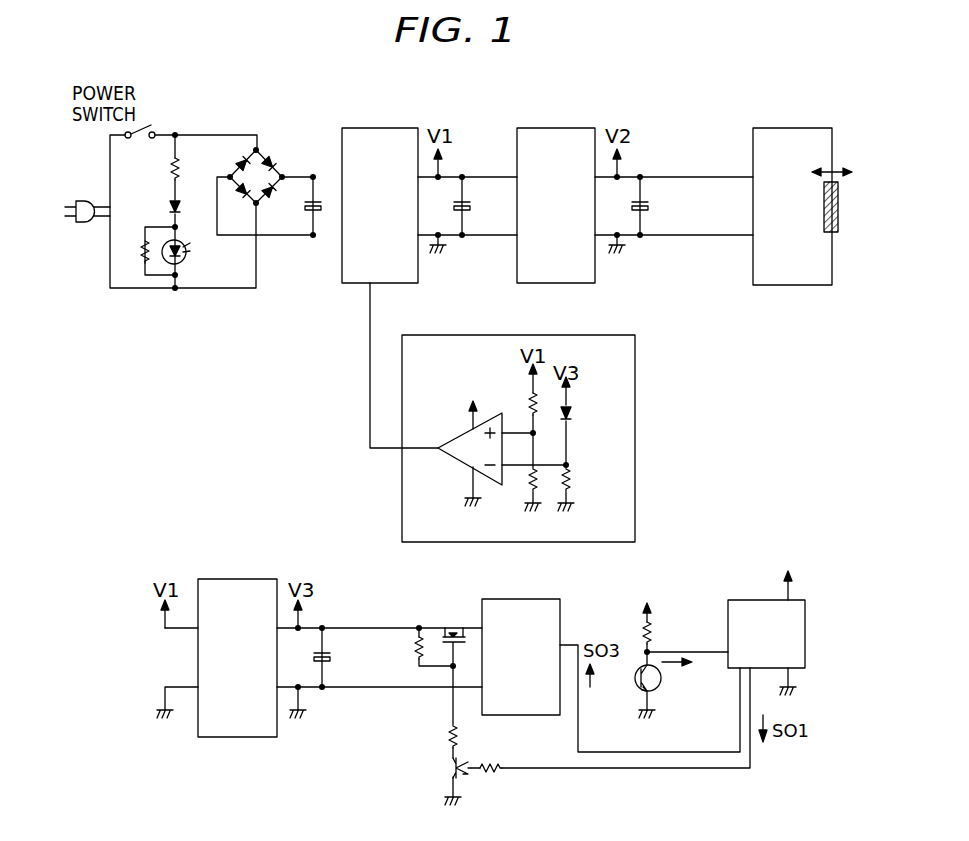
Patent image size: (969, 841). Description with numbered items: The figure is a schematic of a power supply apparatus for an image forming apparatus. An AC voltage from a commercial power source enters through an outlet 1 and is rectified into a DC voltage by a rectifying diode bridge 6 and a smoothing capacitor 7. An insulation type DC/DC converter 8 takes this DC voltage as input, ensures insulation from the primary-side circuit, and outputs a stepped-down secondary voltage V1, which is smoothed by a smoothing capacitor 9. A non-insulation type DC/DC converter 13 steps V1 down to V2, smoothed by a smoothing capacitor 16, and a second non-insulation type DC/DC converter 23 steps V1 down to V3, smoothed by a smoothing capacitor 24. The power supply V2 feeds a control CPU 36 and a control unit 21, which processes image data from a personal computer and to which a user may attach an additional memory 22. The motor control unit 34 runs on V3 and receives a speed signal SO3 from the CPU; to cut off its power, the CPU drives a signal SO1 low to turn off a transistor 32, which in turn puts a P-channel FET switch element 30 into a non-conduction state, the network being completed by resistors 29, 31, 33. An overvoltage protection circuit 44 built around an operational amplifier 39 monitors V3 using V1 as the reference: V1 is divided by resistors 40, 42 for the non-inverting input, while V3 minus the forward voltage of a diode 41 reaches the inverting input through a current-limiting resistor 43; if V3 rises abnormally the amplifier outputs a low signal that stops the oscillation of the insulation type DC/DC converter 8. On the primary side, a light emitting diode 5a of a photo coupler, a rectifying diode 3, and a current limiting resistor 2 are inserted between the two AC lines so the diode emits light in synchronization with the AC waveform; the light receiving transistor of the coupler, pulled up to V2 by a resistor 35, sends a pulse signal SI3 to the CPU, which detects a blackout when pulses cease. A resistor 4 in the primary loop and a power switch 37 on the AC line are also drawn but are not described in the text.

The outlet 1 is at (75, 201).
The current limiting resistor 2 is at (171, 171).
The rectifying diode 3 is at (171, 208).
The resistor 4 is at (140, 253).
The light emitting diode 5a is at (170, 263).
The rectifying diode bridge 6 is at (268, 164).
The smoothing capacitor 7 is at (307, 206).
The insulation type DC/DC converter 8 is at (398, 128).
The smoothing capacitor 9 is at (467, 202).
The non-insulation type DC/DC converter 13 is at (578, 128).
The smoothing capacitor 16 is at (655, 204).
The control unit 21 is at (806, 128).
The additional memory 22 is at (826, 232).
The non-insulation type DC/DC converter 23 is at (247, 579).
The smoothing capacitor 24 is at (331, 653).
The resistor 29 is at (416, 651).
The switch element 30 is at (453, 629).
The resistor 31 is at (451, 748).
The transistor 32 is at (450, 772).
The resistor 33 is at (492, 776).
The motor control unit 34 is at (538, 599).
The resistor 35 is at (639, 630).
The control CPU 36 is at (745, 600).
The power switch 37 is at (144, 129).
The operational amplifier 39 is at (438, 452).
The resistor 40 is at (539, 408).
The diode 41 is at (569, 415).
The resistor 42 is at (528, 485).
The resistor 43 is at (571, 488).
The overvoltage protection circuit 44 is at (402, 512).